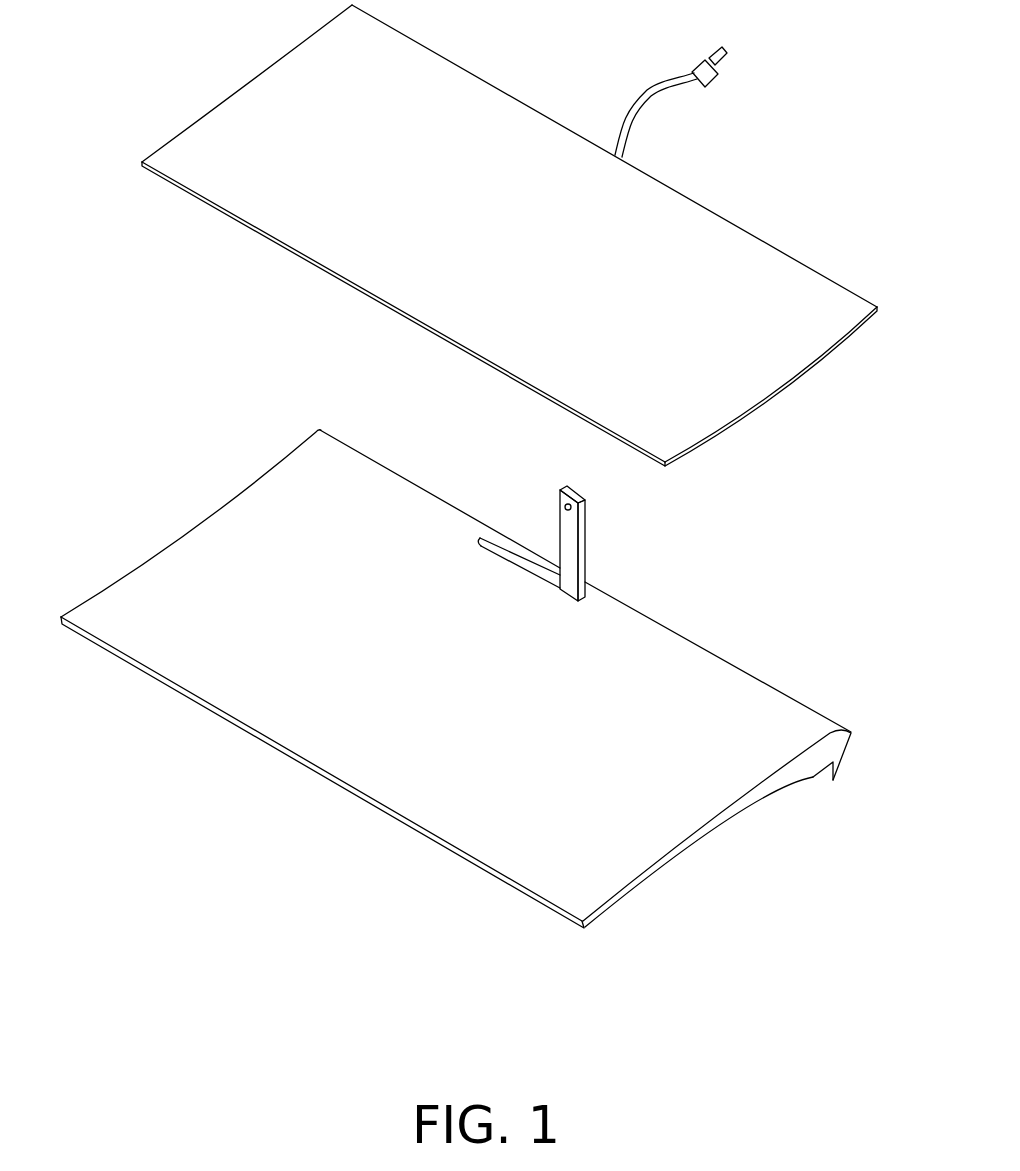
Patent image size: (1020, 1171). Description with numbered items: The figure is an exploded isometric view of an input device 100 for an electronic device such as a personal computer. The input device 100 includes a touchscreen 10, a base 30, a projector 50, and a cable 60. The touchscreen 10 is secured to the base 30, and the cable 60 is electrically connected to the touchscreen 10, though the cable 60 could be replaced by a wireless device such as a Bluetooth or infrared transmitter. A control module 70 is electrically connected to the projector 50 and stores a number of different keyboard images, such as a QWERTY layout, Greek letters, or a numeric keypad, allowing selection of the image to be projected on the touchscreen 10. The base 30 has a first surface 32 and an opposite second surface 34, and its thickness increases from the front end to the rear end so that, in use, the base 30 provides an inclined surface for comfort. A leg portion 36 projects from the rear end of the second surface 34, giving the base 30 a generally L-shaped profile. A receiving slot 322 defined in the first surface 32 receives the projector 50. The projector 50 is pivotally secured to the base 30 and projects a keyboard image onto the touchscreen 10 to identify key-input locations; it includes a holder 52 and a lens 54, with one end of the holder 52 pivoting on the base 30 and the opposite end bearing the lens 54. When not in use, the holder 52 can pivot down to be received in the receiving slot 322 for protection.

The input device 100 is at (170, 76).
The touchscreen 10 is at (226, 214).
The cable 60 is at (641, 110).
The control module 70 is at (702, 68).
The base 30 is at (303, 458).
The first surface 32 is at (748, 712).
The second surface 34 is at (760, 818).
The leg portion 36 is at (833, 763).
The receiving slot 322 is at (490, 543).
The projector 50 is at (668, 500).
The holder 52 is at (572, 555).
The lens 54 is at (573, 506).